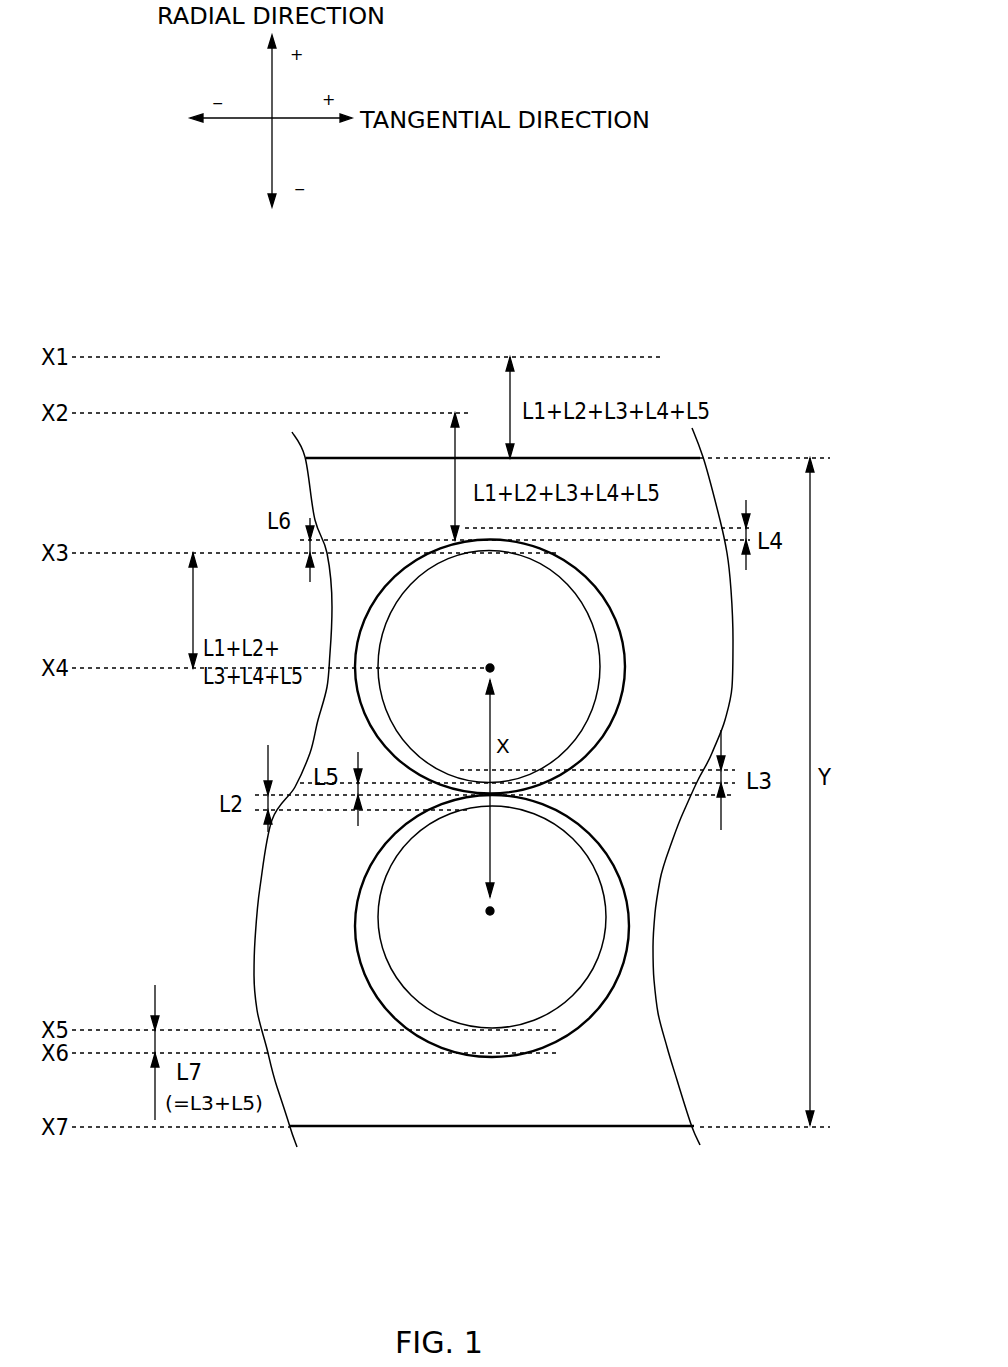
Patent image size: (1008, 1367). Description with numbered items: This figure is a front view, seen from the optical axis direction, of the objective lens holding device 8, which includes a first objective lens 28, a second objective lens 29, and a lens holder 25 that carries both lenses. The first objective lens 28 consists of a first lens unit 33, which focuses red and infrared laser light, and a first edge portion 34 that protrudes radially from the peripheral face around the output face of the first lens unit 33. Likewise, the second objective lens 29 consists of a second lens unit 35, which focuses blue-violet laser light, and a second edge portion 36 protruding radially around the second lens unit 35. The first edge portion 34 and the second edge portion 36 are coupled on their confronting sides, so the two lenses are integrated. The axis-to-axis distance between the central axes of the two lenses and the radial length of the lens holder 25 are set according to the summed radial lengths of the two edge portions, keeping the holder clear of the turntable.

The objective lens holding device 8 is at (493, 824).
The lens holder 25 is at (401, 1126).
The first objective lens 28 is at (465, 933).
The second objective lens 29 is at (525, 667).
The first lens unit 33 is at (397, 906).
The first edge portion 34 is at (363, 966).
The second lens unit 35 is at (597, 643).
The second edge portion 36 is at (593, 588).